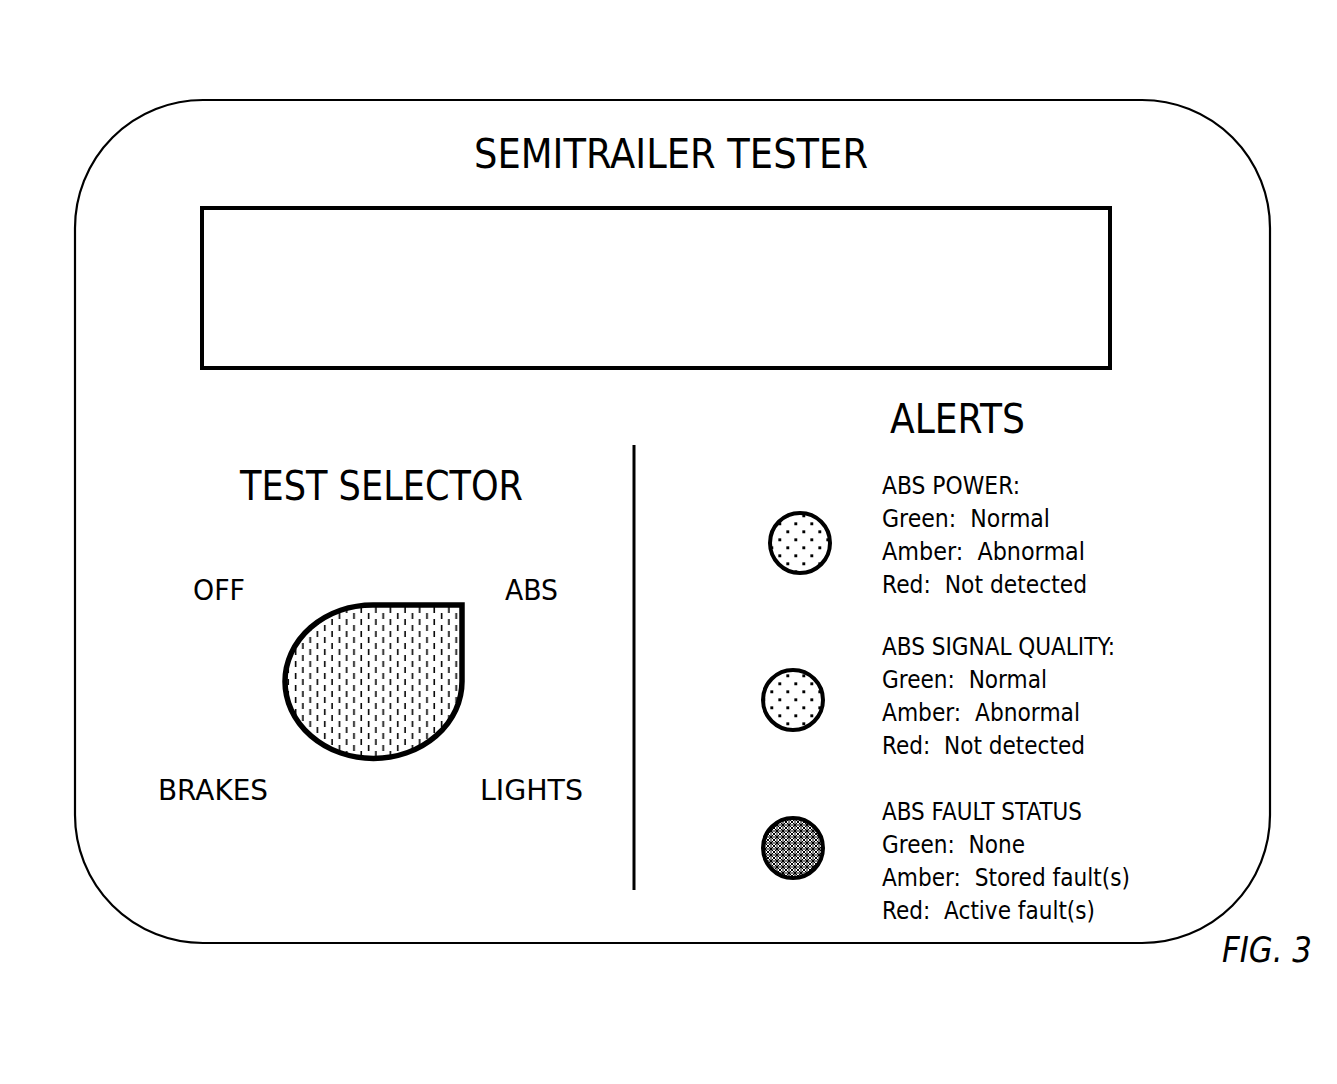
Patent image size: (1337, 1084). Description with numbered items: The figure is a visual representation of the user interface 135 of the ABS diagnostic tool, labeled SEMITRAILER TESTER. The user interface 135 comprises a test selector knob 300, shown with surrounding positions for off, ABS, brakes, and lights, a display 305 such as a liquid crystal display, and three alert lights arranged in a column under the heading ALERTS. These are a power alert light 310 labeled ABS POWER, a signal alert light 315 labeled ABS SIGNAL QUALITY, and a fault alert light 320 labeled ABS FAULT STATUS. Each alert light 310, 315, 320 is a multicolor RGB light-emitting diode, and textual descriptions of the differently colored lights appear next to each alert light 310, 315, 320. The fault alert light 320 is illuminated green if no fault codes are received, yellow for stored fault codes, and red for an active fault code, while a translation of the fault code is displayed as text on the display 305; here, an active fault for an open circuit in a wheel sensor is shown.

The user interface 135 is at (1195, 99).
The display 305 is at (1112, 266).
The test selector knob 300 is at (463, 673).
The power alert light 310 is at (769, 543).
The signal alert light 315 is at (762, 700).
The fault alert light 320 is at (762, 848).